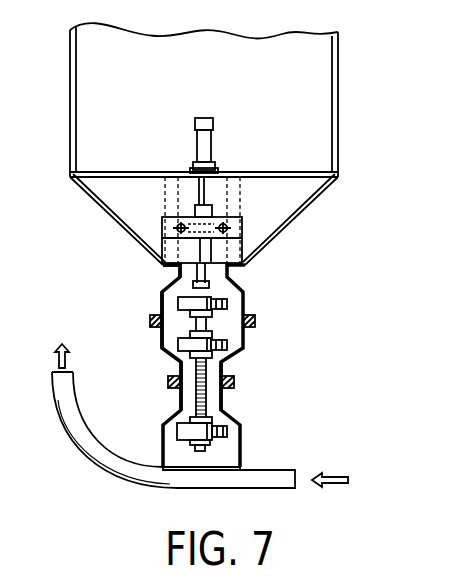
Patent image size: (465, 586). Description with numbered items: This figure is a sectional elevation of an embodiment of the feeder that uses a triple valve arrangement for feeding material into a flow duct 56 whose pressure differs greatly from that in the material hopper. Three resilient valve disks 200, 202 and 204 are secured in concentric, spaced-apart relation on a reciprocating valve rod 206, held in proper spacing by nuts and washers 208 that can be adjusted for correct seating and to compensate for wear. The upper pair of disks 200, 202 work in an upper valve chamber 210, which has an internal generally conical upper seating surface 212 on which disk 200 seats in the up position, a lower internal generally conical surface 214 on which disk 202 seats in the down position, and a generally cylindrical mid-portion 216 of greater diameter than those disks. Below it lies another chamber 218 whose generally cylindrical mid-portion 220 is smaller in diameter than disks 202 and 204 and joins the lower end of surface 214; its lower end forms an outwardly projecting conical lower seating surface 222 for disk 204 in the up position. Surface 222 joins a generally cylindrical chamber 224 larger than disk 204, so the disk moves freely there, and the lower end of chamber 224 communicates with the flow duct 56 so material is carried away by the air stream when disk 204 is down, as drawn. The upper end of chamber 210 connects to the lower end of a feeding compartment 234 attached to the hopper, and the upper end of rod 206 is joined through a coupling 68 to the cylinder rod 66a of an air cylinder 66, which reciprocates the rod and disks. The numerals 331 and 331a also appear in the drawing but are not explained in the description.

The flow duct 56 is at (250, 488).
The air cylinder 66 is at (211, 148).
The cylinder rod 66a is at (200, 192).
The coupling 68 is at (234, 216).
The resilient valve disk 200 is at (243, 300).
The resilient valve disk 202 is at (243, 350).
The resilient valve disk 204 is at (243, 432).
The reciprocating valve rod 206 is at (243, 258).
The nuts and washers 208 is at (190, 346).
The upper valve chamber 210 is at (150, 314).
The upper seating surface 212 is at (170, 283).
The lower internal conical surface 214 is at (178, 345).
The cylindrical mid-portion 216 is at (150, 322).
The chamber 218 is at (236, 391).
The cylindrical mid-portion 220 is at (223, 397).
The lower seating surface 222 is at (306, 207).
The cylindrical chamber 224 is at (243, 456).
The feeding compartment 234 is at (242, 233).
The metering valve 331 is at (162, 227).
The metering valve 331a is at (332, 219).